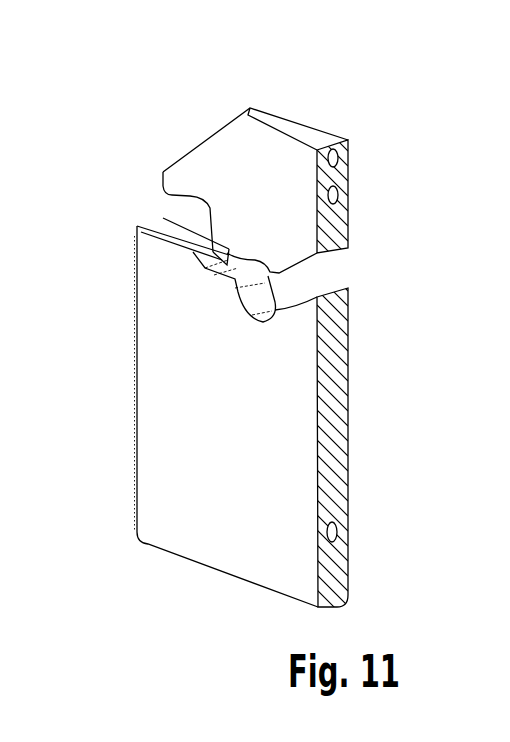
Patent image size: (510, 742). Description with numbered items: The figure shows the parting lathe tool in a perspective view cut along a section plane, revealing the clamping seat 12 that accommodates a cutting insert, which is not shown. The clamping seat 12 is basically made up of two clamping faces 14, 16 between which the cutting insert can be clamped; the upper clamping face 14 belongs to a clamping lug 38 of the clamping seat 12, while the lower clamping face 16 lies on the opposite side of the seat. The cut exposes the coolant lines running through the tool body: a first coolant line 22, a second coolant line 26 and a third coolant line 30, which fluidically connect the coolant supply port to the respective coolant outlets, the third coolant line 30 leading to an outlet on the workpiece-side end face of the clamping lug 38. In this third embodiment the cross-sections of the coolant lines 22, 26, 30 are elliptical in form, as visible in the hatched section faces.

The plate 12 is at (143, 200).
The spring hook 14 is at (163, 194).
The flange 16 is at (162, 222).
The hole 22 is at (338, 195).
The hole 26 is at (337, 531).
The hole 30 is at (338, 157).
The clamping block 38 is at (185, 114).